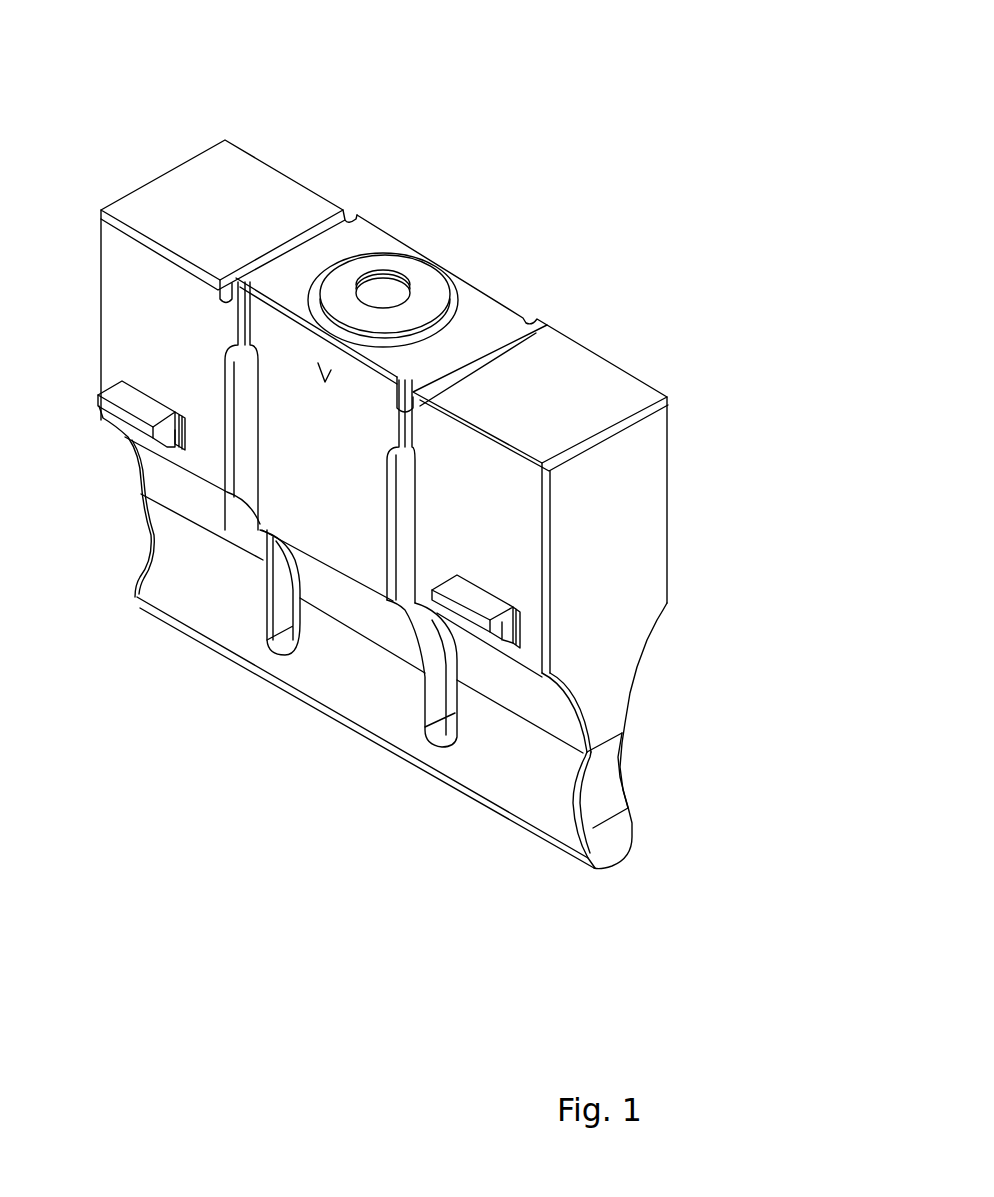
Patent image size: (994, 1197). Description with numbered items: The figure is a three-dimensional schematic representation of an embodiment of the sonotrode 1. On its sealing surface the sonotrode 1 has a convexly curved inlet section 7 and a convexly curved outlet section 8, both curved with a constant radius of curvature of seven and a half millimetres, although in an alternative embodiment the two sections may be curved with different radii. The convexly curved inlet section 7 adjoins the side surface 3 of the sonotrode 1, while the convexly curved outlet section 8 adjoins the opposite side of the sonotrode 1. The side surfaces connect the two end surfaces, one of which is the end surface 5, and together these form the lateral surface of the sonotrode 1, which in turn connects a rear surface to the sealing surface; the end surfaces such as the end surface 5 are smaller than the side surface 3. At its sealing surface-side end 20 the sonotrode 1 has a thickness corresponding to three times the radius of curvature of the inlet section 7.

The sonotrode 1 is at (435, 538).
The side surface 3 is at (328, 613).
The end surface 5 is at (583, 558).
The convexly curved inlet section 7 is at (383, 787).
The convexly curved outlet section 8 is at (631, 834).
The sealing surface-side end 20 is at (567, 880).